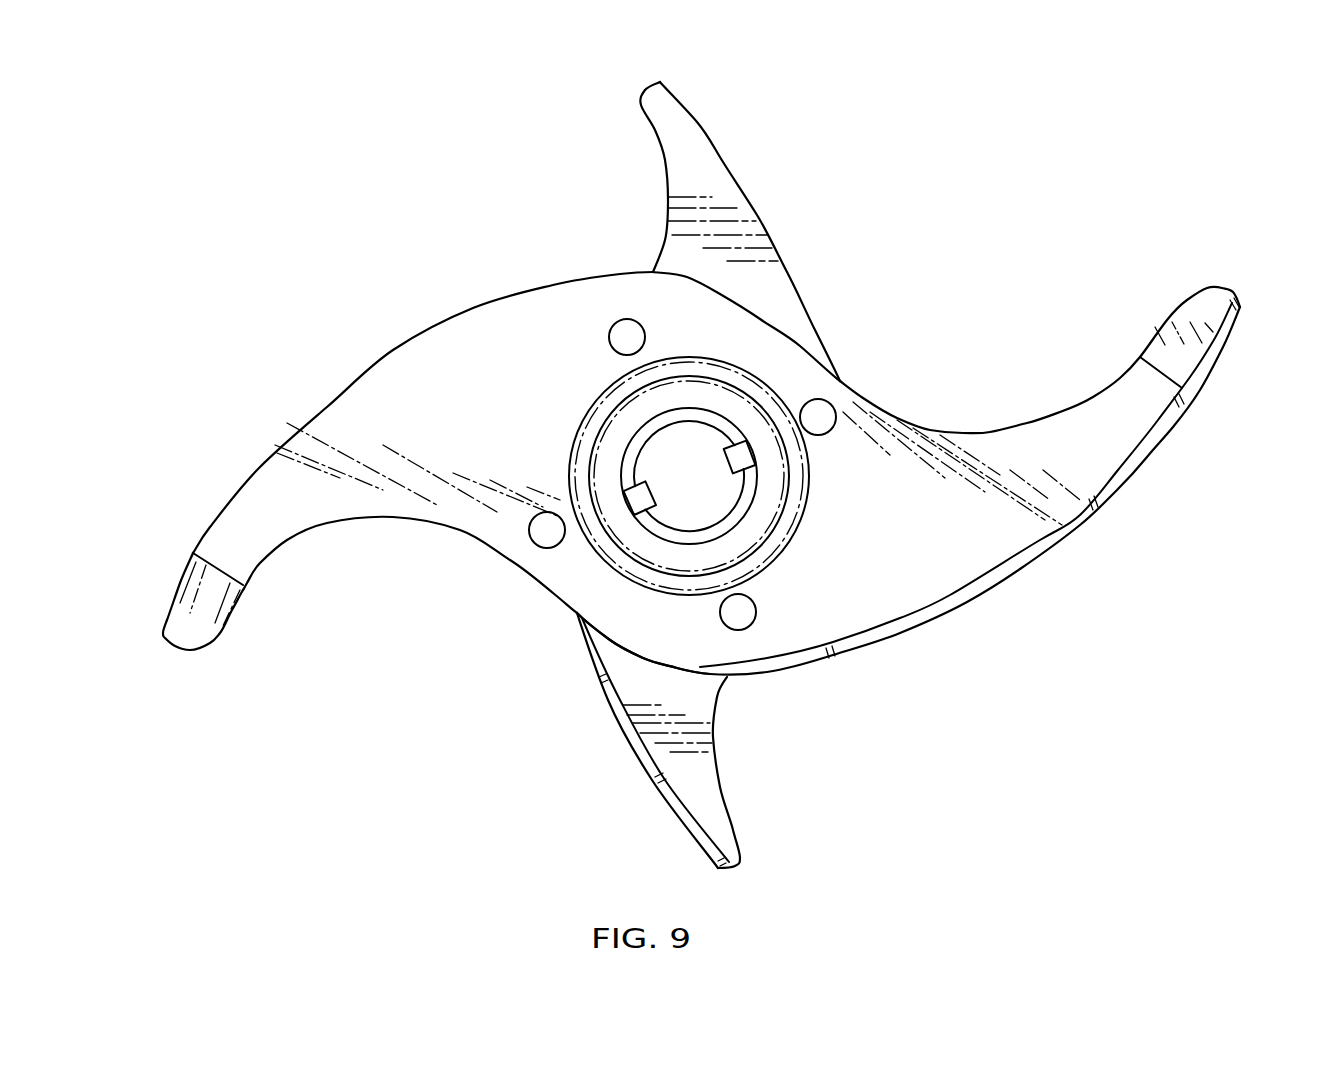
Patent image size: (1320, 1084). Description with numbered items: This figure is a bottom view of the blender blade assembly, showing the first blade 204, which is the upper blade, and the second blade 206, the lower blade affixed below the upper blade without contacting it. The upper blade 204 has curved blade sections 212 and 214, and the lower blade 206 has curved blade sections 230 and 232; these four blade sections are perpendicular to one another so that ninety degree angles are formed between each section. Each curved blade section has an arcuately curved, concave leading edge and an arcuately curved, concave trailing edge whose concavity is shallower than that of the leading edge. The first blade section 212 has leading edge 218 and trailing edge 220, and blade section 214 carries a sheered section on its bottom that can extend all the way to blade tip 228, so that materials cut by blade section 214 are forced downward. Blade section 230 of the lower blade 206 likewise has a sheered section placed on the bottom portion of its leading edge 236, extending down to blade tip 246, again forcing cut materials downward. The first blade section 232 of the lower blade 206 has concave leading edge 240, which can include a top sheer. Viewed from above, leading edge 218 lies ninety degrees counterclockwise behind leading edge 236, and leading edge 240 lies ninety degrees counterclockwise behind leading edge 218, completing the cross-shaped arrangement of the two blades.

The first blade 204 is at (783, 303).
The second blade 206 is at (595, 592).
The first blade section 212 is at (740, 215).
The second blade section 214 is at (707, 792).
The leading edge 218 is at (697, 122).
The trailing edge 220 is at (647, 772).
The blade tip 228 is at (740, 860).
The blade section 230 is at (917, 595).
The first blade section 232 is at (343, 502).
The leading edge 236 is at (1066, 527).
The leading edge 240 is at (473, 307).
The blade tip 246 is at (1186, 311).